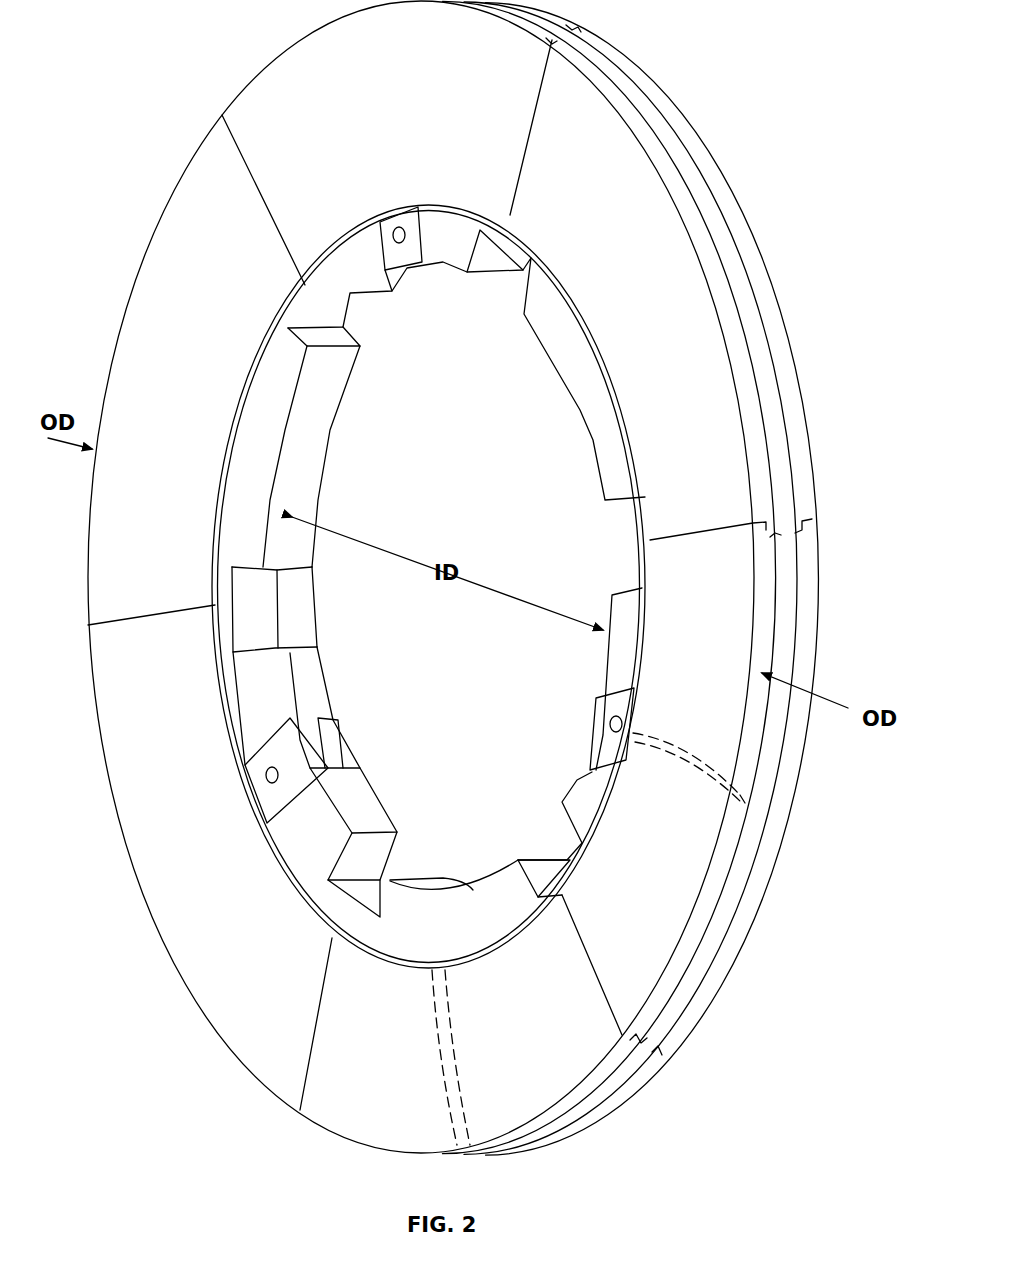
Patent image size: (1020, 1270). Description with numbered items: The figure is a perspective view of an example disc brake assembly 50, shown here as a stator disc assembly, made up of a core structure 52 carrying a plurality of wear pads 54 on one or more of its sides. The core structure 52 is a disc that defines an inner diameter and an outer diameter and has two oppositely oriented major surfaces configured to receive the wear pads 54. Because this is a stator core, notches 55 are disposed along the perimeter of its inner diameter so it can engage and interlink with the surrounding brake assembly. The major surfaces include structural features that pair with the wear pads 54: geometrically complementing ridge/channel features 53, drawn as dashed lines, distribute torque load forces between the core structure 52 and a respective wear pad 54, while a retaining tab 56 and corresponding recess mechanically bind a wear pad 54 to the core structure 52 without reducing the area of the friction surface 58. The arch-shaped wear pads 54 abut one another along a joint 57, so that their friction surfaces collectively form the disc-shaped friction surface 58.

The disc brake assembly 50 is at (170, 80).
The core structure 52 is at (695, 180).
The ridge/channel features 53 is at (670, 722).
The wear pads 54 is at (690, 210).
The notches 55 is at (310, 604).
The retaining tab 56 is at (398, 222).
The joint 57 is at (756, 521).
The friction surface 58 is at (230, 890).